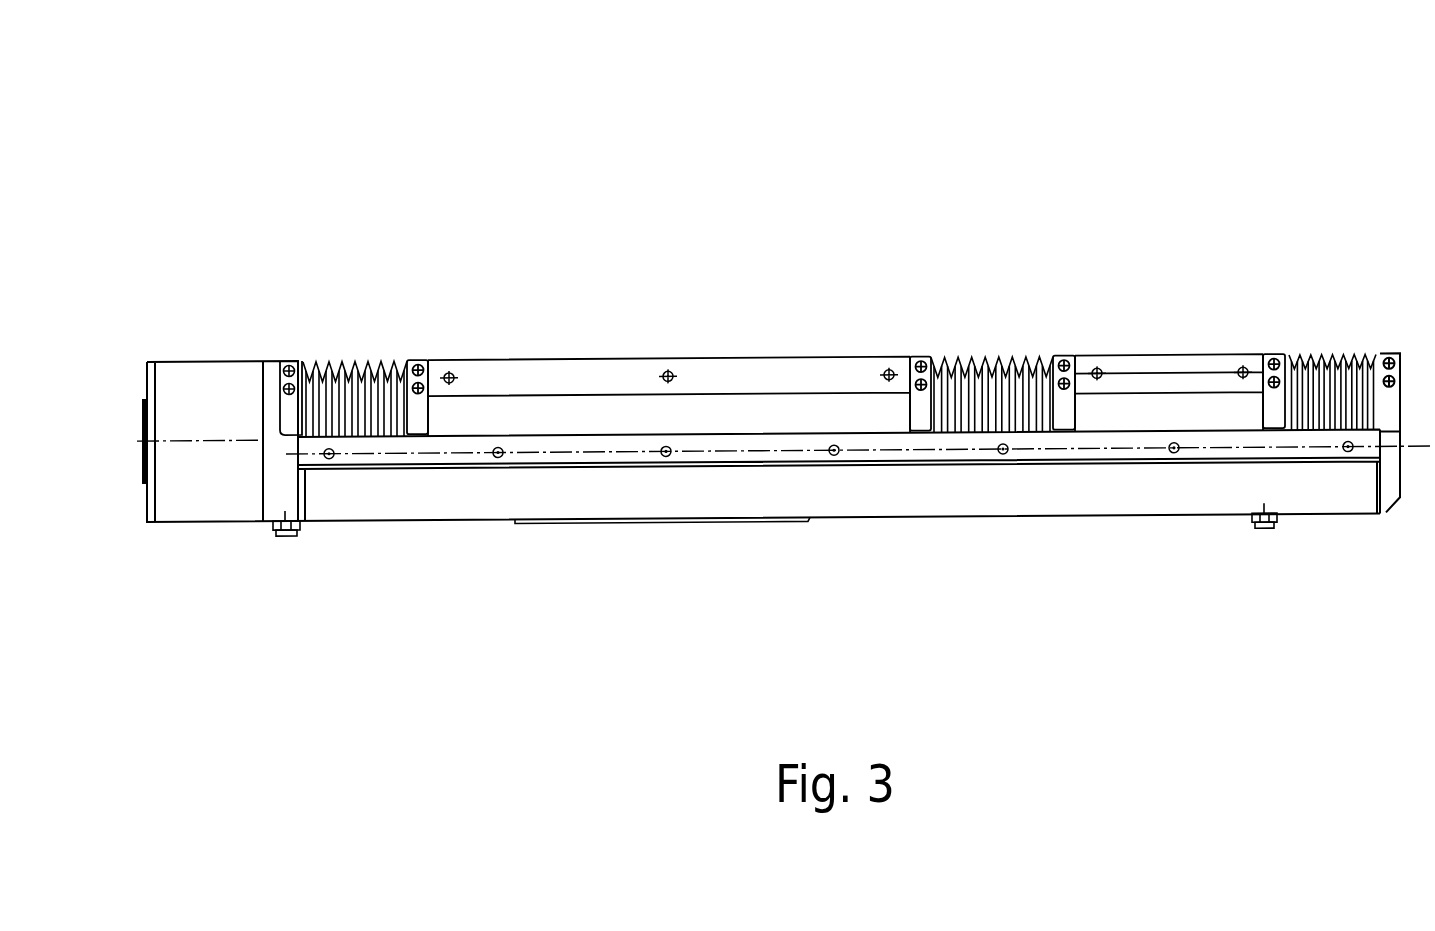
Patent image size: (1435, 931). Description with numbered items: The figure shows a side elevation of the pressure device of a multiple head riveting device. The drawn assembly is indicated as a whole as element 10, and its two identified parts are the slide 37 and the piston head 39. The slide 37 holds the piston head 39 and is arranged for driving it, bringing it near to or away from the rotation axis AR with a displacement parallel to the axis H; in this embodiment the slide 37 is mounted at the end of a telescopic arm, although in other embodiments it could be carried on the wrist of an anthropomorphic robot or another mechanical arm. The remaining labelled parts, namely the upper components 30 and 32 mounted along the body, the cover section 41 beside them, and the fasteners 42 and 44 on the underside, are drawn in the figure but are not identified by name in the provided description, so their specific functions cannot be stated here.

The linear actuator assembly 10 is at (1157, 157).
The carriage plate 30 is at (1198, 367).
The second carriage plate 32 is at (740, 380).
The slide 37 is at (1327, 363).
The piston head 39 is at (993, 363).
The left bellows cover 41 is at (355, 363).
The adjusting nut 42 is at (1250, 527).
The adjusting nut 44 is at (297, 535).